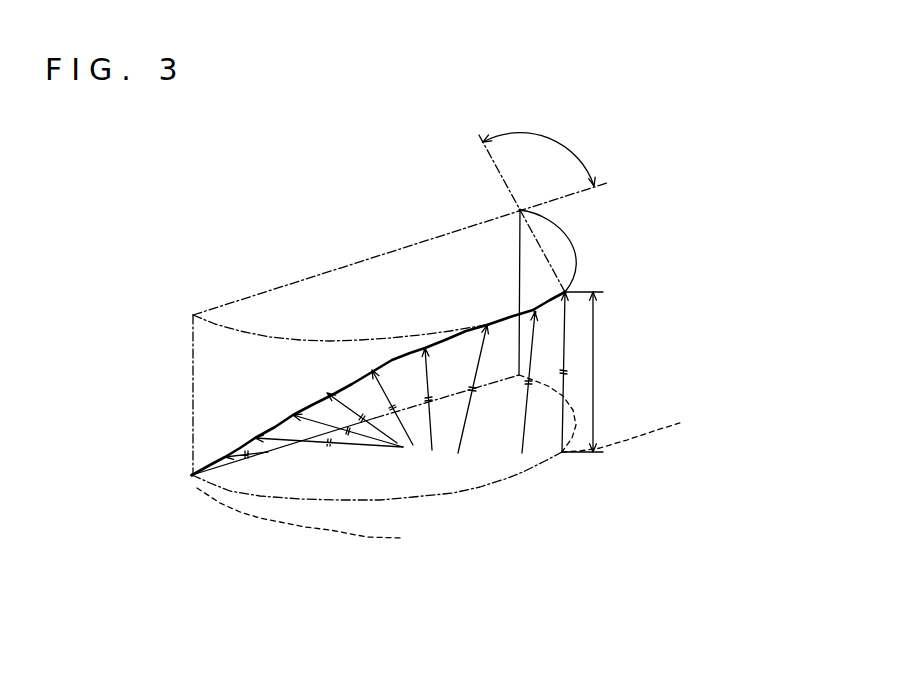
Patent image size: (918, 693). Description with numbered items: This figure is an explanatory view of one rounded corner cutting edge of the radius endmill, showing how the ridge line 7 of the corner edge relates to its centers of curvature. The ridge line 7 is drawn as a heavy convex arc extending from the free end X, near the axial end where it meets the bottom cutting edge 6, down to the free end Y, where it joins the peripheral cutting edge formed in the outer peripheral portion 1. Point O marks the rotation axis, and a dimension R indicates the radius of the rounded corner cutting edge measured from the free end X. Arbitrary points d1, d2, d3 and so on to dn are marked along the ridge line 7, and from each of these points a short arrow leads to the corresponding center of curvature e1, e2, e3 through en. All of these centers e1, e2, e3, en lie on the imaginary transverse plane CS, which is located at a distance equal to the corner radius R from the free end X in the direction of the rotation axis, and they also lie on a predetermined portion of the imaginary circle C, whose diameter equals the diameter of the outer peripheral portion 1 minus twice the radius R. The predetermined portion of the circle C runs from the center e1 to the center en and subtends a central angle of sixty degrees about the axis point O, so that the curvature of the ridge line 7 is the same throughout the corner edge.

The outer peripheral portion 1 is at (243, 512).
The bottom cutting edge 6 is at (560, 227).
The ridge line 7 is at (386, 357).
The axis center point O is at (503, 285).
The free end X is at (568, 285).
The free end Y is at (192, 475).
The imaginary circle C is at (622, 443).
The imaginary transverse plane CS is at (405, 497).
The radius of rounded corner cutting edge R is at (583, 372).
The arbitrary point on ridge line d1 is at (568, 290).
The arbitrary point on ridge line d2 is at (535, 312).
The arbitrary point on ridge line d3 is at (483, 322).
The arbitrary point on ridge line dn is at (192, 475).
The center of curvature e1 is at (562, 453).
The center of curvature e2 is at (522, 453).
The center of curvature e3 is at (458, 453).
The center of curvature en is at (345, 427).